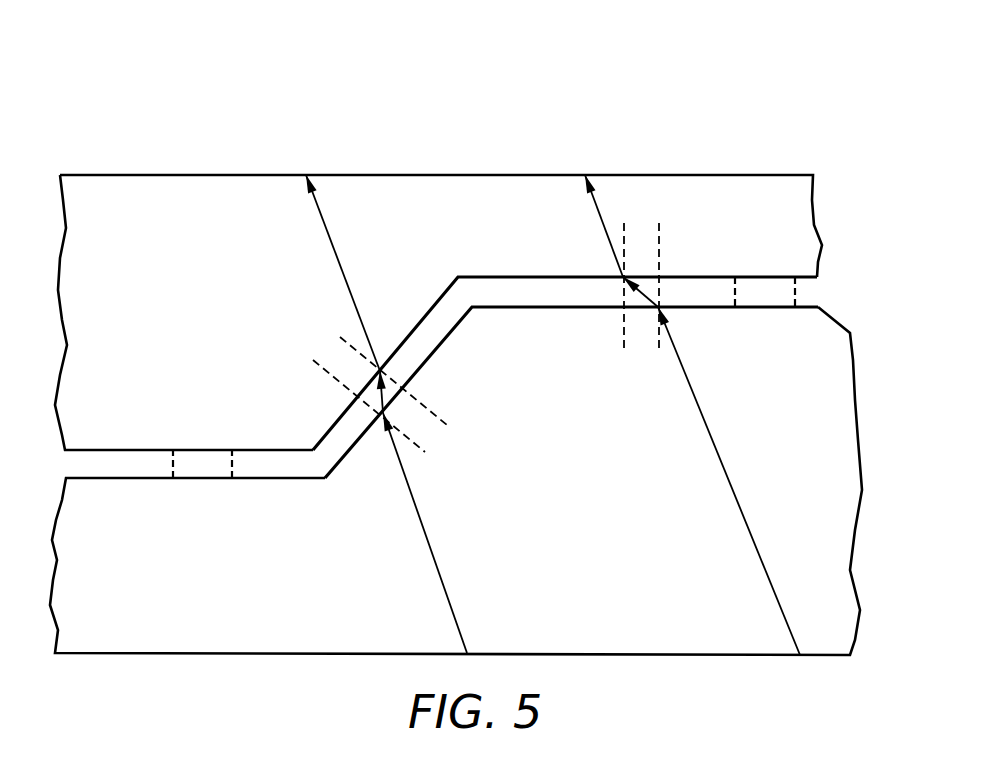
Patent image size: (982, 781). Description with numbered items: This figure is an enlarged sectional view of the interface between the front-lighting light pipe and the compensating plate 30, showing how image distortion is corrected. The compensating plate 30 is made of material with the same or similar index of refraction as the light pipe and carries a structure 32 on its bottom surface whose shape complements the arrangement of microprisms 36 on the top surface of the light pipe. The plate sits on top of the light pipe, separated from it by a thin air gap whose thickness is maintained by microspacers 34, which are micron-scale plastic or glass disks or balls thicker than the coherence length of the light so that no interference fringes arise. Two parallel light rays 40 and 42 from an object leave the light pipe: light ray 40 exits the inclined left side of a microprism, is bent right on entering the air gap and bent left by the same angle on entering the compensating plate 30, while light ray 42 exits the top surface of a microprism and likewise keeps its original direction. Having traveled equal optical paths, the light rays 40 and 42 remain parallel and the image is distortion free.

The compensating plate 30 is at (596, 283).
The structure 32 is at (438, 288).
The microspacers 34 is at (527, 364).
The microprisms 36 is at (456, 481).
The light ray 40 is at (386, 414).
The light ray 42 is at (692, 415).